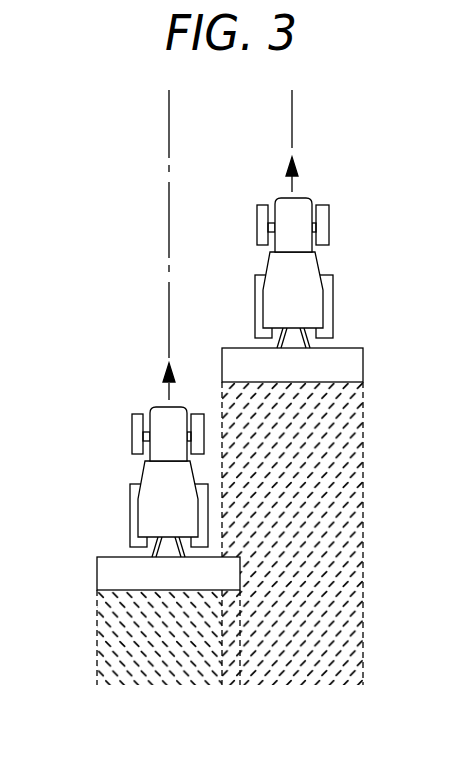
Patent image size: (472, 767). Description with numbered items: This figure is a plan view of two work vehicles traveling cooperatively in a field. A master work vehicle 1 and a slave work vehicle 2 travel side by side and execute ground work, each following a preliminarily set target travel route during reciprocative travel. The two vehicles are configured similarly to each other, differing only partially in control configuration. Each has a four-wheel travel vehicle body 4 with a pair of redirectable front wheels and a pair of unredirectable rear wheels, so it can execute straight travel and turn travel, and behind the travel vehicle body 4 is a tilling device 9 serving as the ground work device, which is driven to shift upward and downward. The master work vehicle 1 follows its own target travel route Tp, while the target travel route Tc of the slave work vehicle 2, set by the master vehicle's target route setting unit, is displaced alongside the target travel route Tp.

The master work vehicle 1 is at (362, 275).
The slave work vehicle 2 is at (98, 486).
The travel vehicle body 4 is at (295, 213).
The tilling device 9 is at (350, 363).
The target travel route of the slave work vehicle Tc is at (169, 223).
The target travel route of the master work vehicle Tp is at (292, 128).